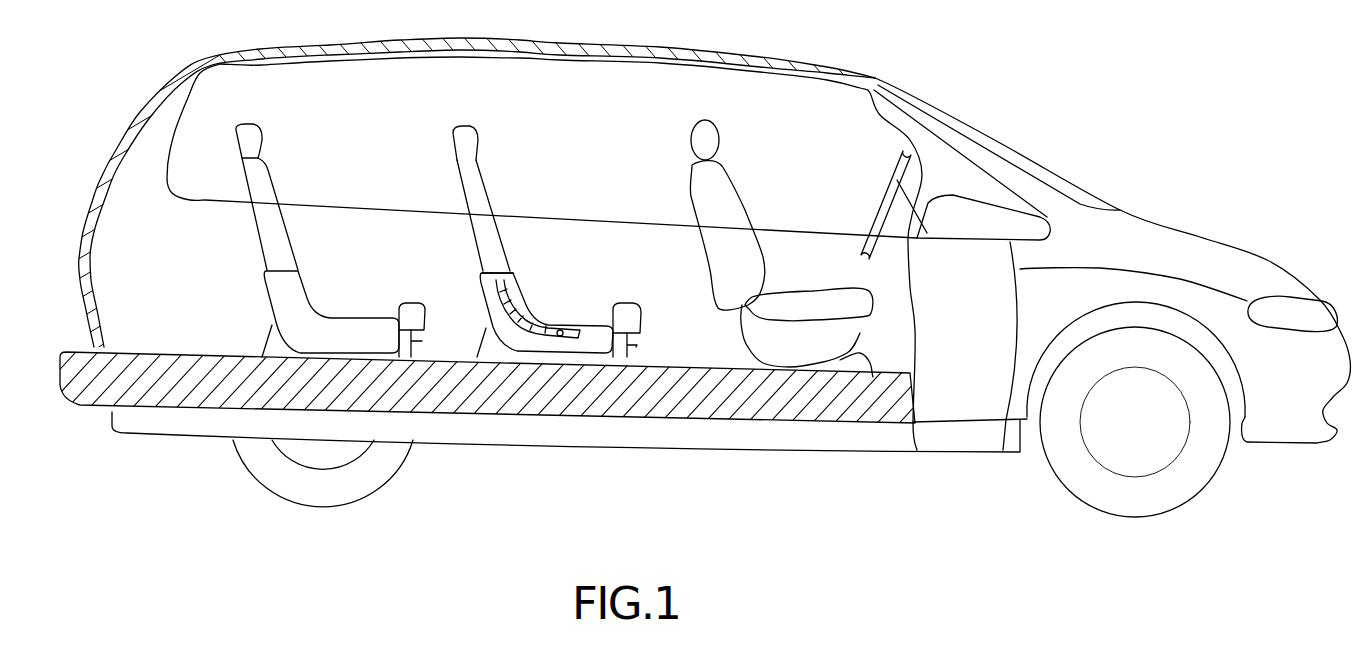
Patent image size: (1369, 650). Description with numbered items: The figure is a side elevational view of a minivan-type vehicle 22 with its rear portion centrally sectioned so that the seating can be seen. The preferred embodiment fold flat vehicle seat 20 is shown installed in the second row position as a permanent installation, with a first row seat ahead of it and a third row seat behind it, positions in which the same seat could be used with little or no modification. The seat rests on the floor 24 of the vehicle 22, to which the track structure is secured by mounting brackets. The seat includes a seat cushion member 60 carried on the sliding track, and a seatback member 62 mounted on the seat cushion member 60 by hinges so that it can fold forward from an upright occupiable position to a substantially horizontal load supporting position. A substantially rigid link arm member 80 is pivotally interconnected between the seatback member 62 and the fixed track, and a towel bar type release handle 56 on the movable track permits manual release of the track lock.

The fold flat vehicle seat 20 is at (544, 220).
The vehicle 22 is at (1180, 250).
The floor 24 is at (830, 393).
The release handle 56 is at (633, 347).
The seat cushion member 60 is at (600, 320).
The seatback member 62 is at (487, 245).
The link arm member 80 is at (528, 327).